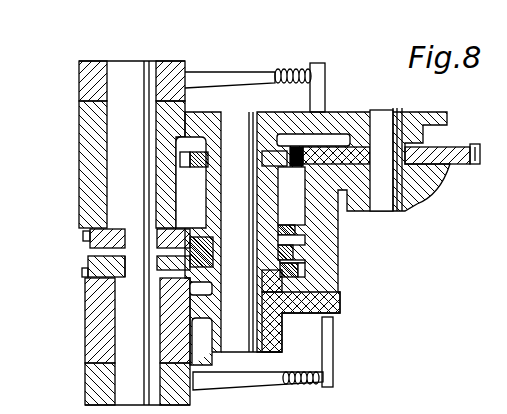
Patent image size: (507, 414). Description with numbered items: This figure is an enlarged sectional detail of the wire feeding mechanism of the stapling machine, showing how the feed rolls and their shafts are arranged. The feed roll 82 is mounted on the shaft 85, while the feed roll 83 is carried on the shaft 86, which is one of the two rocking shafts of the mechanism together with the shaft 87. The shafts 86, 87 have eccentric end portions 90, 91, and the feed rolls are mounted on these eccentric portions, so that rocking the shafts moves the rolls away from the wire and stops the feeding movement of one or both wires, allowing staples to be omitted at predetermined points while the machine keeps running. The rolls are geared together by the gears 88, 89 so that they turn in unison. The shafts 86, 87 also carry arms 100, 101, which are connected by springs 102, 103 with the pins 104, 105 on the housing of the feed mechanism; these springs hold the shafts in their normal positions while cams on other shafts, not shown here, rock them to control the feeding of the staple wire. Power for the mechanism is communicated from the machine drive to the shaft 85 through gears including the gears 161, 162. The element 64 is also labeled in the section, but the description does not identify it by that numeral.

The shaft 86 is at (118, 163).
The eccentric end portion 90 is at (137, 232).
The feed roll 83 is at (92, 242).
The ring 64 is at (88, 265).
The eccentric end portion 91 is at (136, 270).
The shaft 87 is at (130, 318).
The gear 89 is at (194, 228).
The gear 88 is at (196, 322).
The feed roll 82 is at (280, 251).
The shaft 85 is at (247, 326).
The pin 105 is at (333, 325).
The arm 101 is at (243, 380).
The spring 103 is at (303, 384).
The arm 100 is at (244, 72).
The spring 102 is at (300, 70).
The pin 104 is at (327, 84).
The gear 161 is at (480, 151).
The gear 162 is at (297, 150).